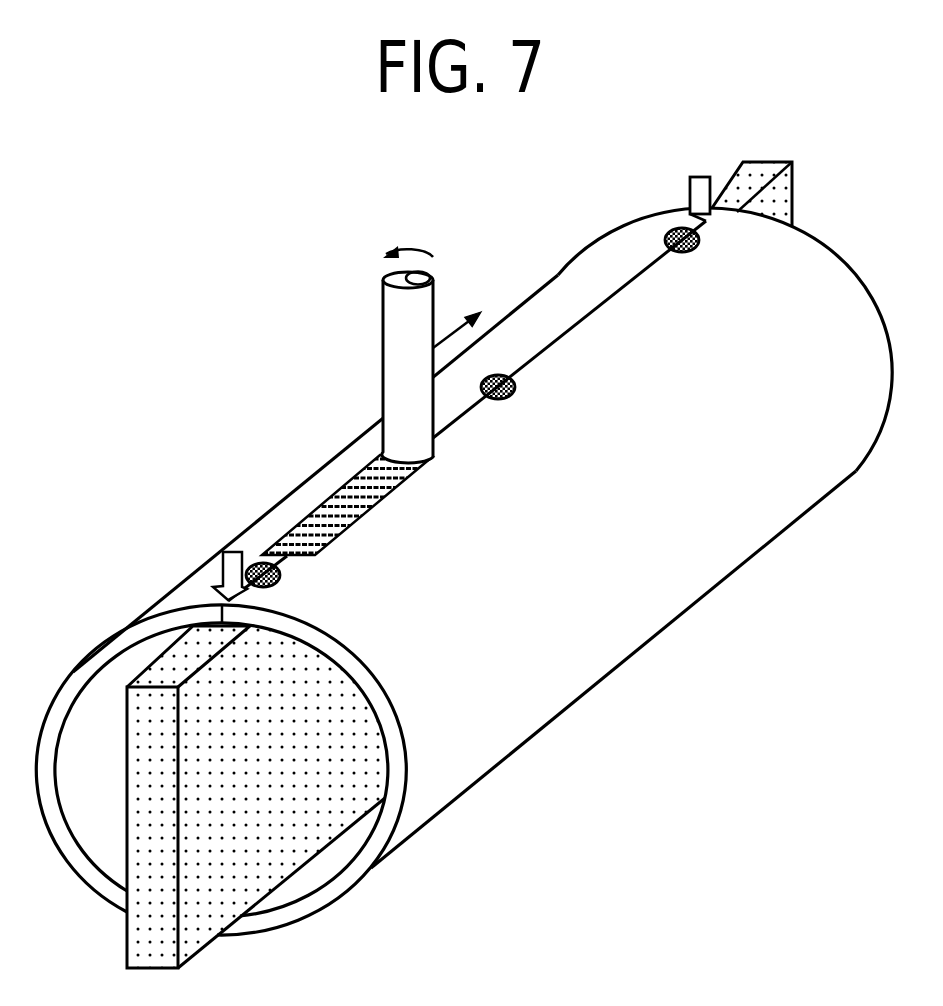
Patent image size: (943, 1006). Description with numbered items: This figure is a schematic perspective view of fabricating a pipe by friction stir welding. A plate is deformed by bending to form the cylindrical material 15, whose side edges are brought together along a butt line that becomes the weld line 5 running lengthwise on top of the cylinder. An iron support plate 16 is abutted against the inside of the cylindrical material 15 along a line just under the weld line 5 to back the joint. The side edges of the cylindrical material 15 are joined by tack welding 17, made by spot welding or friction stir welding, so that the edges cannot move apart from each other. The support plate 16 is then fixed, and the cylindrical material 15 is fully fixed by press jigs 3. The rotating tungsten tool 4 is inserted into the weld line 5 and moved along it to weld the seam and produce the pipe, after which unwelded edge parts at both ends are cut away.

The press jig 3 is at (222, 576).
The tool 4 is at (393, 330).
The weld line 5 is at (587, 313).
The cylindrical material 15 is at (559, 687).
The support plate 16 is at (303, 845).
The tack welding 17 is at (667, 243).